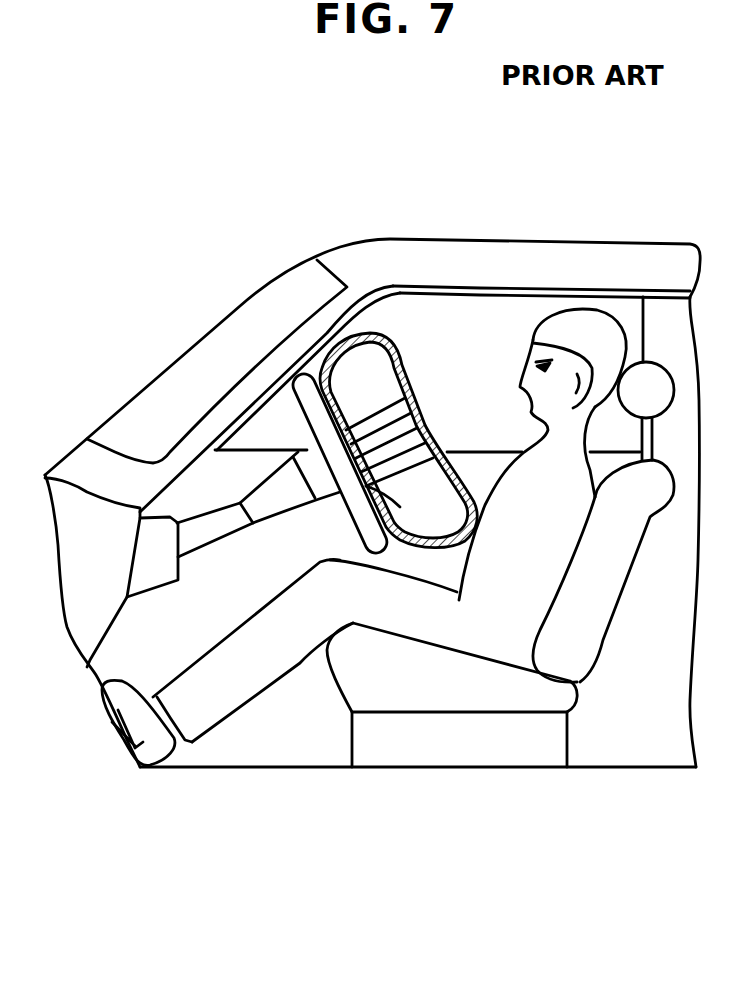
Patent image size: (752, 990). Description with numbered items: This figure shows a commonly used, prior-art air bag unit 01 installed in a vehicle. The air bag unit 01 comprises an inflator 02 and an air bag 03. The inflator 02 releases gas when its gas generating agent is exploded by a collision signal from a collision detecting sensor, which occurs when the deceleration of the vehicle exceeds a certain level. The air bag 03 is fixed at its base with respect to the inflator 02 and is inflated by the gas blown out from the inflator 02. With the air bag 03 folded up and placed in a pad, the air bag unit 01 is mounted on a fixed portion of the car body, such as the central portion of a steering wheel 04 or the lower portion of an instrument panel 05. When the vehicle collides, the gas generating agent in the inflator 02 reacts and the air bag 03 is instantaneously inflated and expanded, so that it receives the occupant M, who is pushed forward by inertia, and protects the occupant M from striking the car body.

The air bag unit 01 is at (380, 350).
The inflator 02 is at (387, 333).
The air bag 03 is at (350, 335).
The steering wheel 04 is at (352, 502).
The instrument panel 05 is at (165, 570).
The occupant M is at (503, 633).